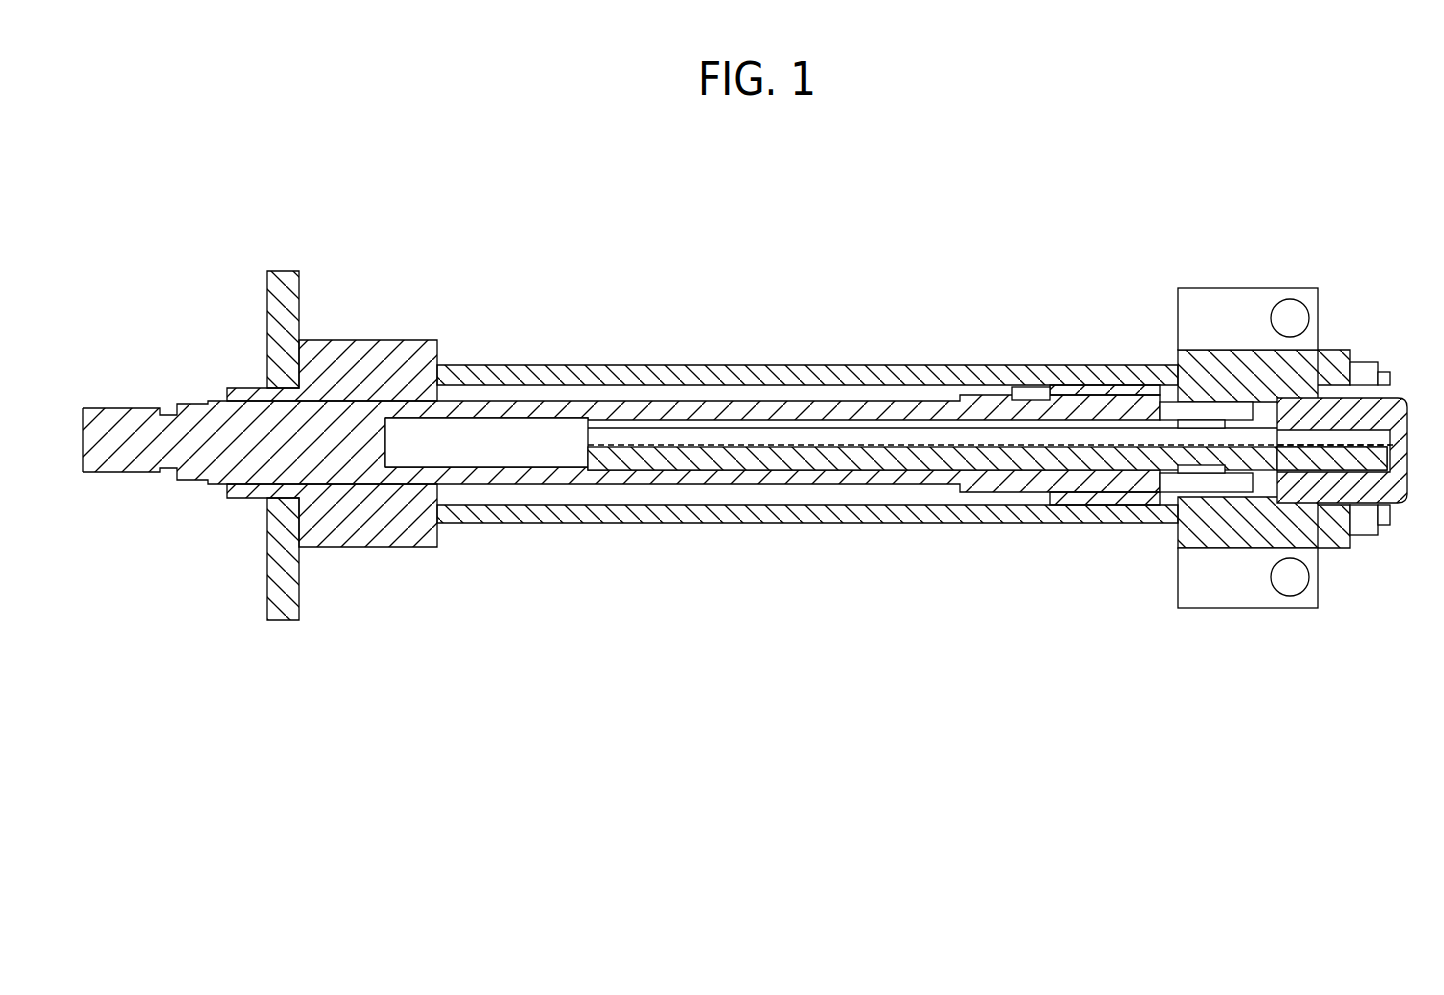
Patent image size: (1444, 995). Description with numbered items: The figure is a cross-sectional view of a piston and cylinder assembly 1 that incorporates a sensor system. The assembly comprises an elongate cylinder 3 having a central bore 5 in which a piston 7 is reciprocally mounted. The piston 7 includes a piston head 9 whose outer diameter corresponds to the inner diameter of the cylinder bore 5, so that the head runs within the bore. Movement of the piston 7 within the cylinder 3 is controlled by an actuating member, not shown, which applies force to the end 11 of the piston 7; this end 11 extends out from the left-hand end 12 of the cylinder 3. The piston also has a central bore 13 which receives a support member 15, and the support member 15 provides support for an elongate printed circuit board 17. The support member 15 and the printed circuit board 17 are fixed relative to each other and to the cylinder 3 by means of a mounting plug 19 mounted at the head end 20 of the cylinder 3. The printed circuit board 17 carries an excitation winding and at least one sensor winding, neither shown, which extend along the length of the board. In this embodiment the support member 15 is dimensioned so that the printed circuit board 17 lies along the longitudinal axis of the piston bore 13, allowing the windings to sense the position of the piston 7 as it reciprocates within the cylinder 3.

The piston and cylinder assembly 1 is at (758, 333).
The cylinder 3 is at (907, 377).
The central bore 5 is at (994, 402).
The piston 7 is at (791, 478).
The piston head 9 is at (1092, 494).
The end of the piston 11 is at (130, 434).
The left-hand end of the cylinder 12 is at (295, 257).
The central bore of the piston 13 is at (492, 428).
The support member 15 is at (889, 460).
The printed circuit board 17 is at (822, 441).
The mounting plug 19 is at (1364, 490).
The head end of the cylinder 20 is at (1230, 627).